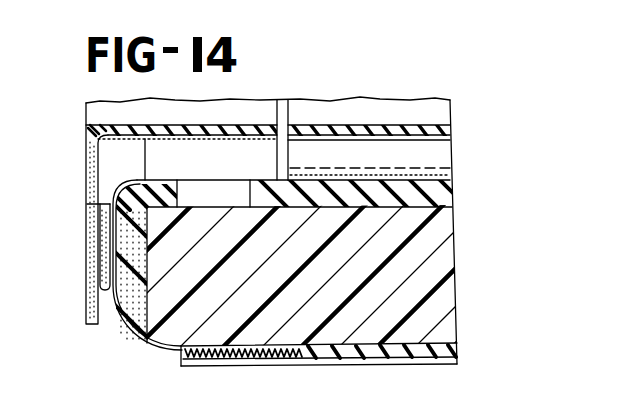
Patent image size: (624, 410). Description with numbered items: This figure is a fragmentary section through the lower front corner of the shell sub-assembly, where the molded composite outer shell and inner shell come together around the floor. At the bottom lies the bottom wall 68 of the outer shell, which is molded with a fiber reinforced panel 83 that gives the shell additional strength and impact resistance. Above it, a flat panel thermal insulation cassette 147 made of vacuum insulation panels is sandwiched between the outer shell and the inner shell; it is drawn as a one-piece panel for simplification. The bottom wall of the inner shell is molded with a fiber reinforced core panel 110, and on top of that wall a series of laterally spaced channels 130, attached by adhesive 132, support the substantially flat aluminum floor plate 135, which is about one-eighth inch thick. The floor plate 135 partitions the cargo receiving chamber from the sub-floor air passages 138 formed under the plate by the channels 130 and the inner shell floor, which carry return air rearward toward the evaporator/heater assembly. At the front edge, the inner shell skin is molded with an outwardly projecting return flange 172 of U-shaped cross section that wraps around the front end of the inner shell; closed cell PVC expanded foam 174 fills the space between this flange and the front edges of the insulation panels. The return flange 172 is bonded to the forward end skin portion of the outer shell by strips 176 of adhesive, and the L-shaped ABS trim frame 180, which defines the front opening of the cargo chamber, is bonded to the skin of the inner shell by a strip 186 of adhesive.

The bottom wall 68 is at (248, 0).
The fiber reinforced panel 83 is at (457, 348).
The fiber reinforced core panel 110 is at (262, 180).
The channel 130 is at (437, 139).
The adhesive 132 is at (438, 168).
The floor plate 135 is at (350, 127).
The sub-floor air passage 138 is at (392, 152).
The thermal insulation cassette 147 is at (454, 251).
The return flange portion 172 is at (135, 333).
The closed cell PVC expanded foam 174 is at (115, 277).
The strip of adhesive 176 is at (265, 366).
The trim frame 180 is at (87, 170).
The strip of adhesive 186 is at (100, 222).